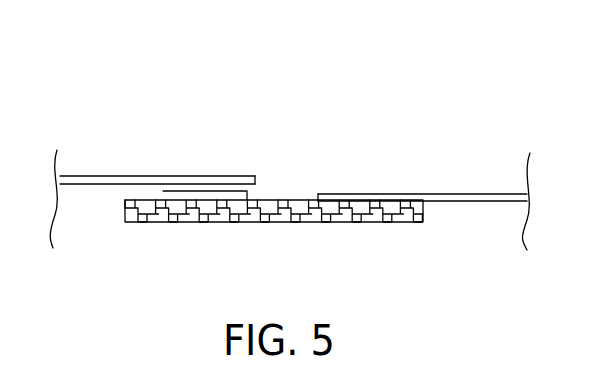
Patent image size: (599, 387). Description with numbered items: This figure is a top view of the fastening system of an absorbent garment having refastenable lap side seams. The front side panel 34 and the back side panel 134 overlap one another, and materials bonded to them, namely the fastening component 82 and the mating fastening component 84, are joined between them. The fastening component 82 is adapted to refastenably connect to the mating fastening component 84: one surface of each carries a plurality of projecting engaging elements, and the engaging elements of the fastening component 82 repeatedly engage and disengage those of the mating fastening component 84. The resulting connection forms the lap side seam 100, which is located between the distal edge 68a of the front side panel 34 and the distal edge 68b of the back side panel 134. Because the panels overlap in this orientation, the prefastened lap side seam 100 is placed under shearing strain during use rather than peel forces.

The front side panel 34 is at (475, 194).
The distal edge of front side panel 68a is at (319, 193).
The distal edge of back side panel 68b is at (255, 177).
The fastening component 82 is at (165, 198).
The mating fastening component 84 is at (175, 222).
The lap side seam 100 is at (262, 194).
The back side panel 134 is at (172, 176).